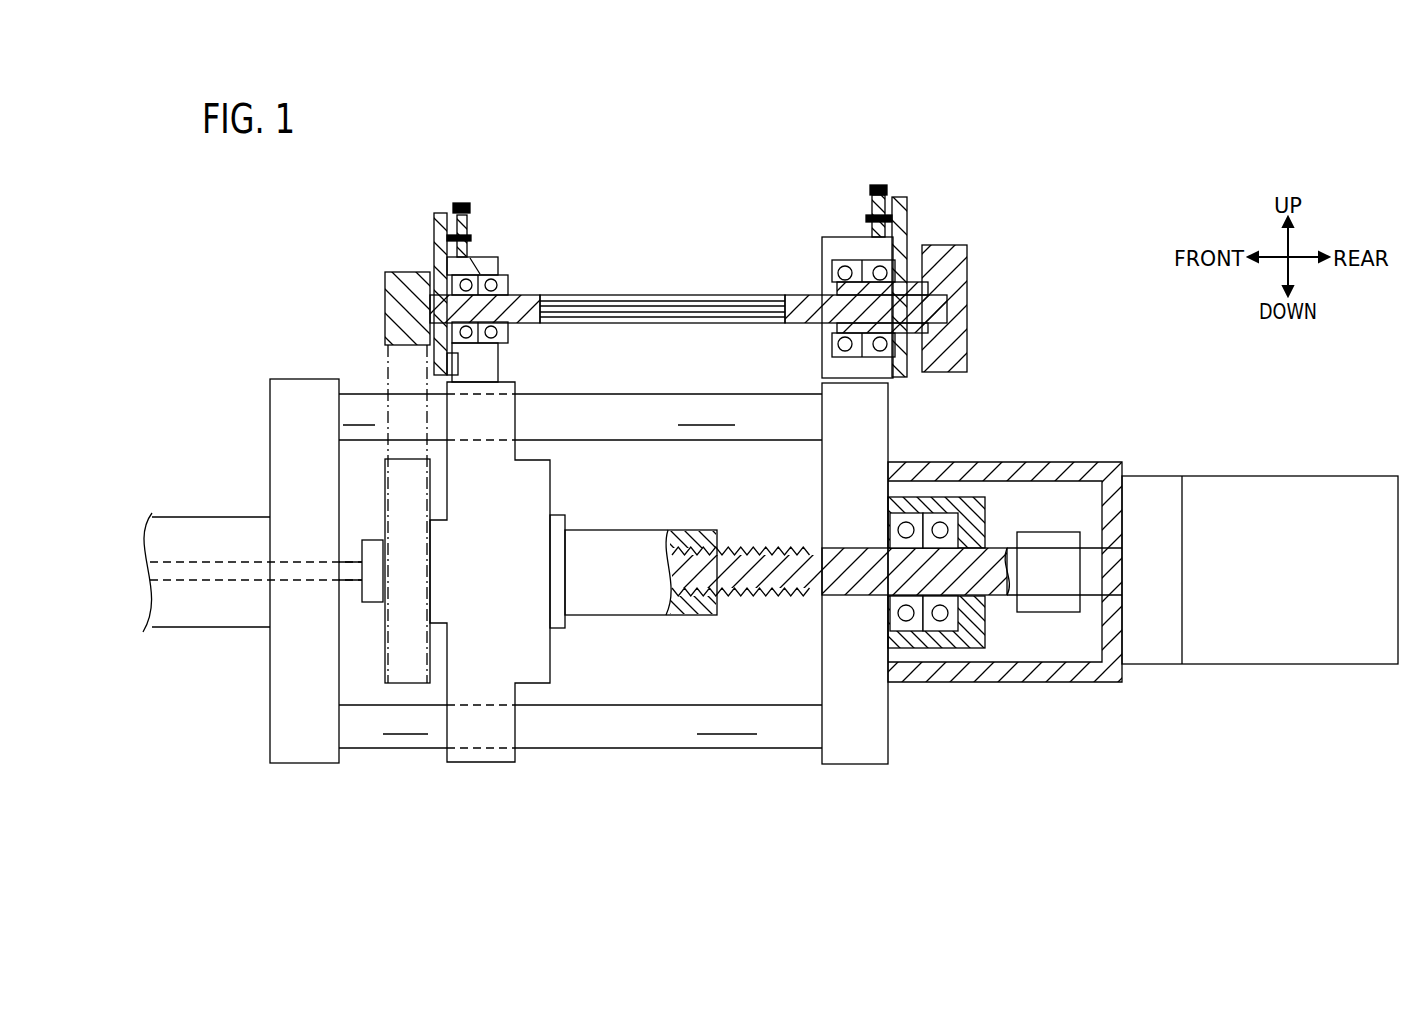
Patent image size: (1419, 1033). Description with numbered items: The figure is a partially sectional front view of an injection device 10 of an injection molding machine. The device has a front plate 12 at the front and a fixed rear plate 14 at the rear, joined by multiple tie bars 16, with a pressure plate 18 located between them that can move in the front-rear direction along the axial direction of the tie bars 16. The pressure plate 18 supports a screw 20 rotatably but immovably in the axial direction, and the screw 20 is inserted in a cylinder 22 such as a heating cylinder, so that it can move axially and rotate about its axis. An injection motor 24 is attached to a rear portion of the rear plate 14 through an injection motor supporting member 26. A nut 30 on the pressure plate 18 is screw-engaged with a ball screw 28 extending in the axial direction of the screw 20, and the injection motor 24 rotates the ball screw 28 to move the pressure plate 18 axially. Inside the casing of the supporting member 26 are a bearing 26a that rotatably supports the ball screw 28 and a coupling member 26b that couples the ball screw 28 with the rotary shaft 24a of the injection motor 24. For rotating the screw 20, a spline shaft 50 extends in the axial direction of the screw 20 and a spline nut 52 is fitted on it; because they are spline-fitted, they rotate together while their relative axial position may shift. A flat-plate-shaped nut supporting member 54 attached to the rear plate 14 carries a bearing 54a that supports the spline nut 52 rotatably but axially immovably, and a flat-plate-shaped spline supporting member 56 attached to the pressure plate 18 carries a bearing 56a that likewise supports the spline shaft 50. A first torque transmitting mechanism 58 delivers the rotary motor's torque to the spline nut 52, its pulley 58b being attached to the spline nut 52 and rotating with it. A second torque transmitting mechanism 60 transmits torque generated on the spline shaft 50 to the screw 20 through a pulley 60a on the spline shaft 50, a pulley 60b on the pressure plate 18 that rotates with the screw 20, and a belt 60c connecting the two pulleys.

The injection device 10 is at (692, 156).
The front plate 12 is at (304, 764).
The rear plate 14 is at (858, 765).
The tie bars 16 is at (610, 395).
The pressure plate 18 is at (483, 763).
The screw 20 is at (205, 582).
The cylinder 22 is at (200, 517).
The injection motor 24 is at (1213, 544).
The rotary shaft 24a is at (1095, 585).
The injection motor supporting member 26 is at (1005, 546).
The bearing 26a is at (916, 511).
The coupling member 26b is at (1030, 550).
The ball screw 28 is at (760, 568).
The nut 30 is at (598, 538).
The spline shaft 50 is at (603, 297).
The spline nut 52 is at (910, 290).
The nut supporting member 54 is at (849, 257).
The bearing 54a is at (849, 267).
The spline supporting member 56 is at (465, 273).
The bearing 56a is at (480, 272).
The first torque transmitting mechanism 58 is at (978, 308).
The pulley 58b is at (955, 343).
The second torque transmitting mechanism 60 is at (358, 452).
The pulley 60a is at (393, 272).
The pulley 60b is at (383, 505).
The belt 60c is at (387, 368).